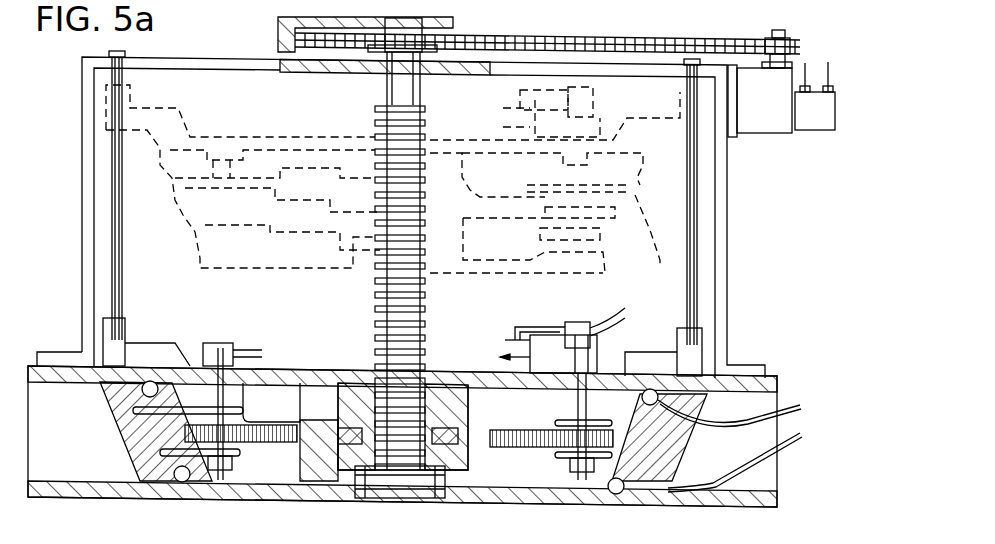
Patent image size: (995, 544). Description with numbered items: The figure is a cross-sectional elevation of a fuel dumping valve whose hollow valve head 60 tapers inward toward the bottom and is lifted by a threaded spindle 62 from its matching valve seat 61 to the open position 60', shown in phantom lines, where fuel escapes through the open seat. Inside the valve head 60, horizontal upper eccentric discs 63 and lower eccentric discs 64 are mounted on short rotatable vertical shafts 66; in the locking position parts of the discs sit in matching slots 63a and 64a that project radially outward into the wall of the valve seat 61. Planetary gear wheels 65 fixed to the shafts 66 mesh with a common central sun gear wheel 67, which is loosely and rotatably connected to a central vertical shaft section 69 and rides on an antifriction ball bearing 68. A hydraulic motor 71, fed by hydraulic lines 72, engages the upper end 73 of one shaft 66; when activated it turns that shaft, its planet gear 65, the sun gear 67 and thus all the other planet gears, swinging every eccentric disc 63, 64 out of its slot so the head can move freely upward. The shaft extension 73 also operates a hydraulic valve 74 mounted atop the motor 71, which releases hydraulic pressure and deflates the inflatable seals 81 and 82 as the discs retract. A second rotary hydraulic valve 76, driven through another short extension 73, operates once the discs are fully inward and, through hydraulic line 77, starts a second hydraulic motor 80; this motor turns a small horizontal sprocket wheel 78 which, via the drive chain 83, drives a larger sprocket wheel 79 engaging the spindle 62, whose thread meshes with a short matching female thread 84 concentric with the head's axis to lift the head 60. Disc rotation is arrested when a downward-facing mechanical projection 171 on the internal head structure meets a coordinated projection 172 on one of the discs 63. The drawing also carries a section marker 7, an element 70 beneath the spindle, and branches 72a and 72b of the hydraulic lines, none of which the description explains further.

The section line 7 is at (270, 537).
The valve head 60 is at (729, 430).
The open position of valve head 60' is at (393, 191).
The valve seat 61 is at (672, 465).
The threaded spindle 62 is at (378, 316).
The upper eccentric discs 63 is at (230, 410).
The matching slots 63a is at (140, 420).
The lower eccentric discs 64 is at (240, 455).
The matching slots 64a is at (170, 458).
The planetary gear wheels 65 is at (252, 425).
The short vertical shafts 66 is at (212, 400).
The central sun gear wheel 67 is at (290, 414).
The antifriction ball bearing 68 is at (343, 446).
The central vertical shaft section 69 is at (440, 412).
The nut 70 is at (352, 498).
The hydraulic motor 71 is at (600, 372).
The hydraulic lines 72 is at (508, 322).
The contact arm 72a is at (508, 338).
The contact arm 72b is at (506, 355).
The shaft extension 73 is at (262, 353).
The hydraulic valve 74 is at (577, 322).
The second rotary hydraulic valve 76 is at (213, 343).
The hydraulic line 77 is at (805, 88).
The small horizontal sprocket wheel 78 is at (788, 38).
The larger sprocket wheel 79 is at (458, 34).
The second hydraulic motor 80 is at (762, 122).
The inflatable seal 81 is at (650, 389).
The inflatable seal 82 is at (617, 495).
The drive chain 83 is at (616, 40).
The female thread 84 is at (372, 384).
The downward facing mechanical projection 171 is at (510, 410).
The coordinated projection 172 is at (616, 395).